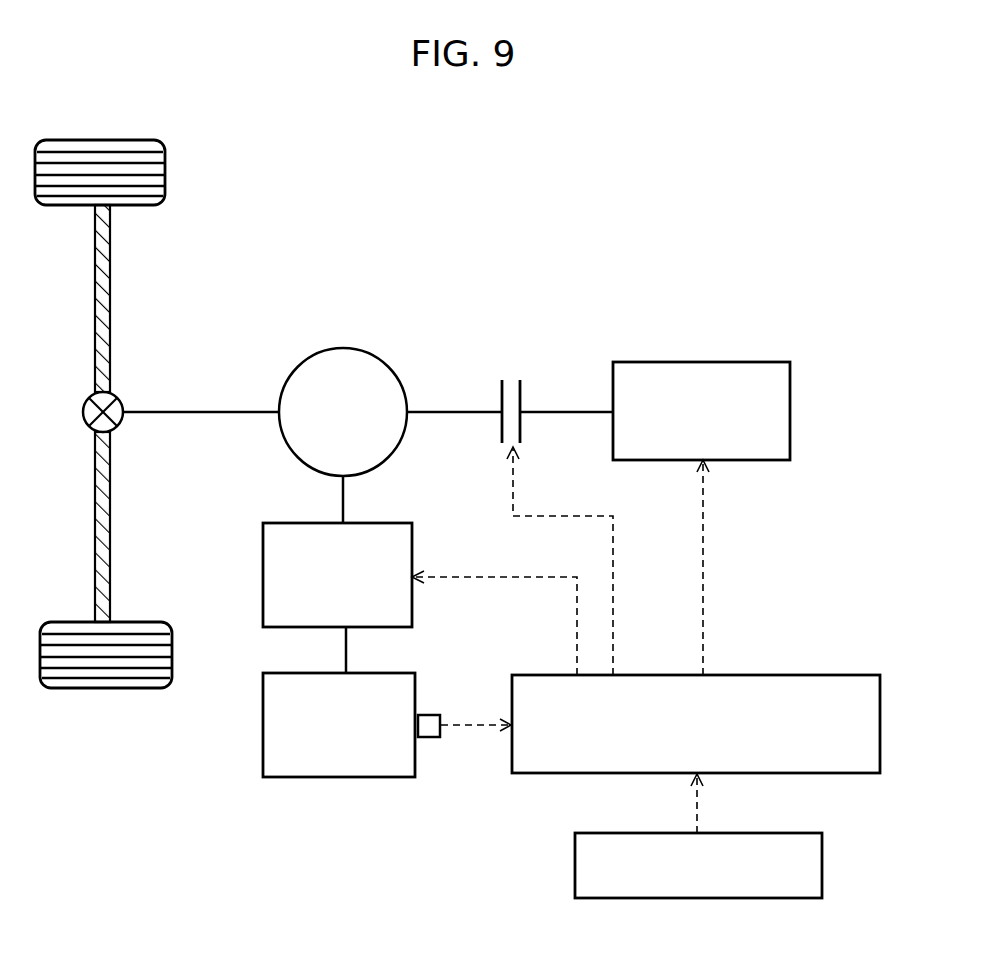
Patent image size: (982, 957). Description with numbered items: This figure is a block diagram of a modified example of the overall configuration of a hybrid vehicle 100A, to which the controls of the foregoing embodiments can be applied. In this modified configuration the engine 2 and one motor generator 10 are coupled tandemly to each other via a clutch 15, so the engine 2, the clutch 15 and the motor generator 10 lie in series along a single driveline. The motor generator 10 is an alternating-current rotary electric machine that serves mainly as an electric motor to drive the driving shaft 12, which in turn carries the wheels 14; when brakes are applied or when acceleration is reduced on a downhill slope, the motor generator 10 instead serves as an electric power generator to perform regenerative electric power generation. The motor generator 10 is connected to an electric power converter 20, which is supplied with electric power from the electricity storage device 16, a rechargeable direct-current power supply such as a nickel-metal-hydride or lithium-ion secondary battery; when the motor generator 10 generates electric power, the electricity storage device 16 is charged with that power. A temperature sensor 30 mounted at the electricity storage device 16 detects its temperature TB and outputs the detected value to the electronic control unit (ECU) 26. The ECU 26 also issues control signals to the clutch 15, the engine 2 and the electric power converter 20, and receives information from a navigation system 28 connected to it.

The hybrid vehicle 100A is at (437, 166).
The wheels 14 is at (118, 140).
The driving shaft 12 is at (110, 299).
The motor generator 10 is at (366, 350).
The clutch 15 is at (512, 378).
The engine 2 is at (702, 362).
The electric power converter 20 is at (372, 522).
The electricity storage device 16 is at (378, 672).
The temperature sensor 30 is at (432, 738).
The electronic control unit (ECU) 26 is at (825, 672).
The navigation system 28 is at (765, 832).